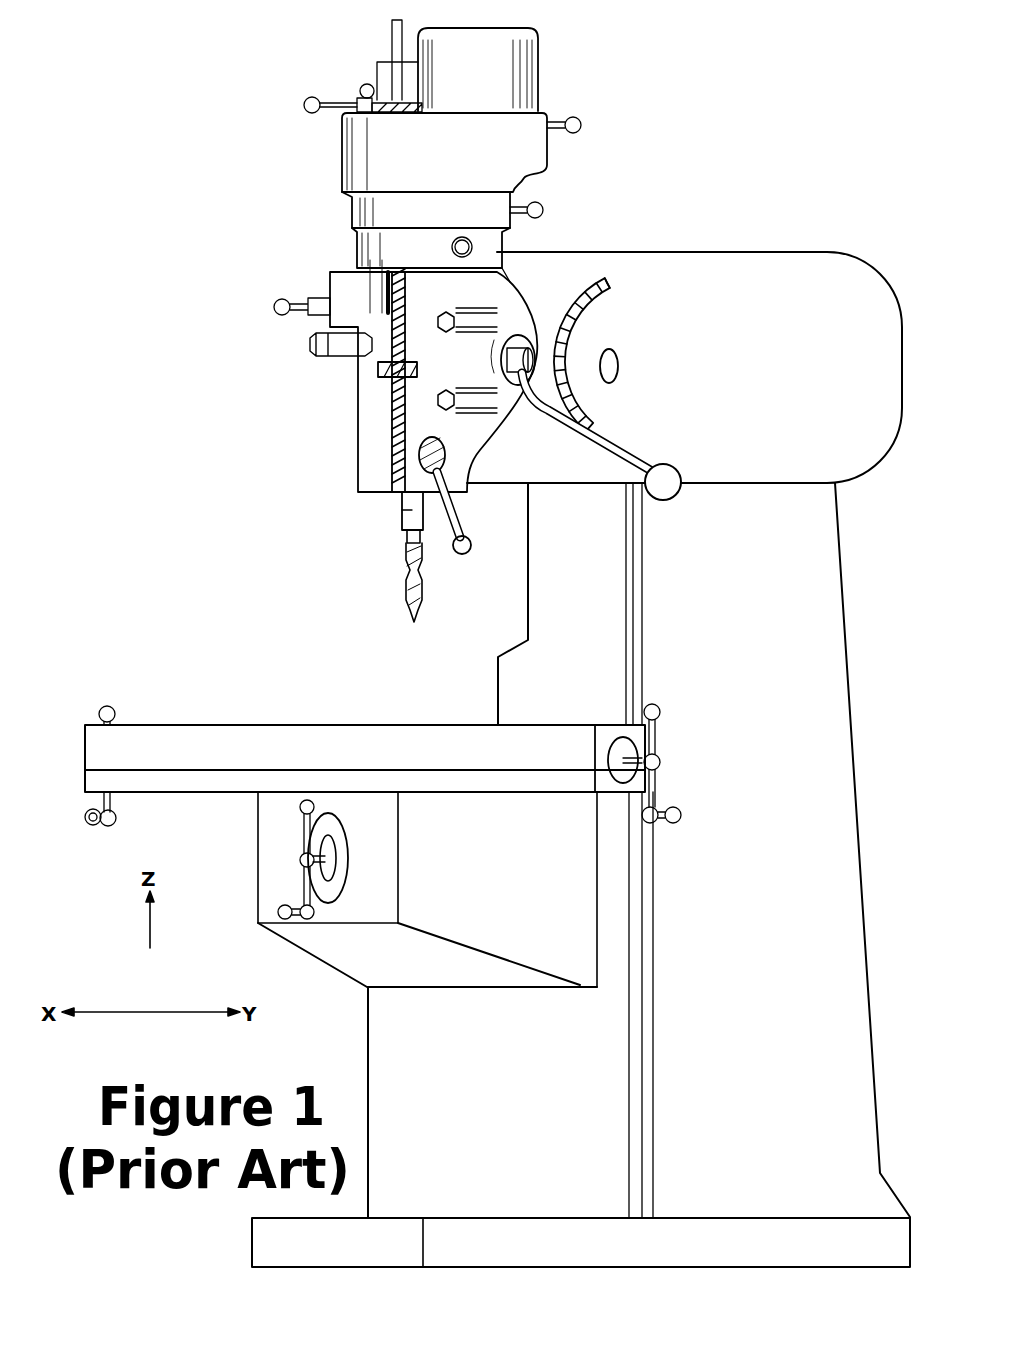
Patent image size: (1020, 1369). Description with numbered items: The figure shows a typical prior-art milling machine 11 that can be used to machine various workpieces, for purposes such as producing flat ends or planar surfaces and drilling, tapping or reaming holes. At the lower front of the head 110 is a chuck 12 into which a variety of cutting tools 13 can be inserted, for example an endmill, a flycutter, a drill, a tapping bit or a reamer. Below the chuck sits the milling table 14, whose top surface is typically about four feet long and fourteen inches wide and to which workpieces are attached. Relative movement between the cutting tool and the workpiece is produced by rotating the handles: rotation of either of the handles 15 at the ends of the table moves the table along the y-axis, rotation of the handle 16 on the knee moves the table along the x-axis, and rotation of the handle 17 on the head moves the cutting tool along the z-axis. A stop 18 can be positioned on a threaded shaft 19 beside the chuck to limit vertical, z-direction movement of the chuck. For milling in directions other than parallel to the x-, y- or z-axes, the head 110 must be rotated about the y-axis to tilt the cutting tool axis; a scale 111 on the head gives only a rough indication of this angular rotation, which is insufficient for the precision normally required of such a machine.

The milling machine 11 is at (204, 236).
The head 110 is at (360, 155).
The scale 111 is at (590, 300).
The chuck 12 is at (400, 509).
The cutting tools 13 is at (407, 588).
The milling table 14 is at (263, 748).
The handles 15 is at (103, 823).
The handle 16 is at (302, 845).
The handle 17 is at (632, 452).
The stop 18 is at (378, 372).
The threaded shaft 19 is at (393, 440).